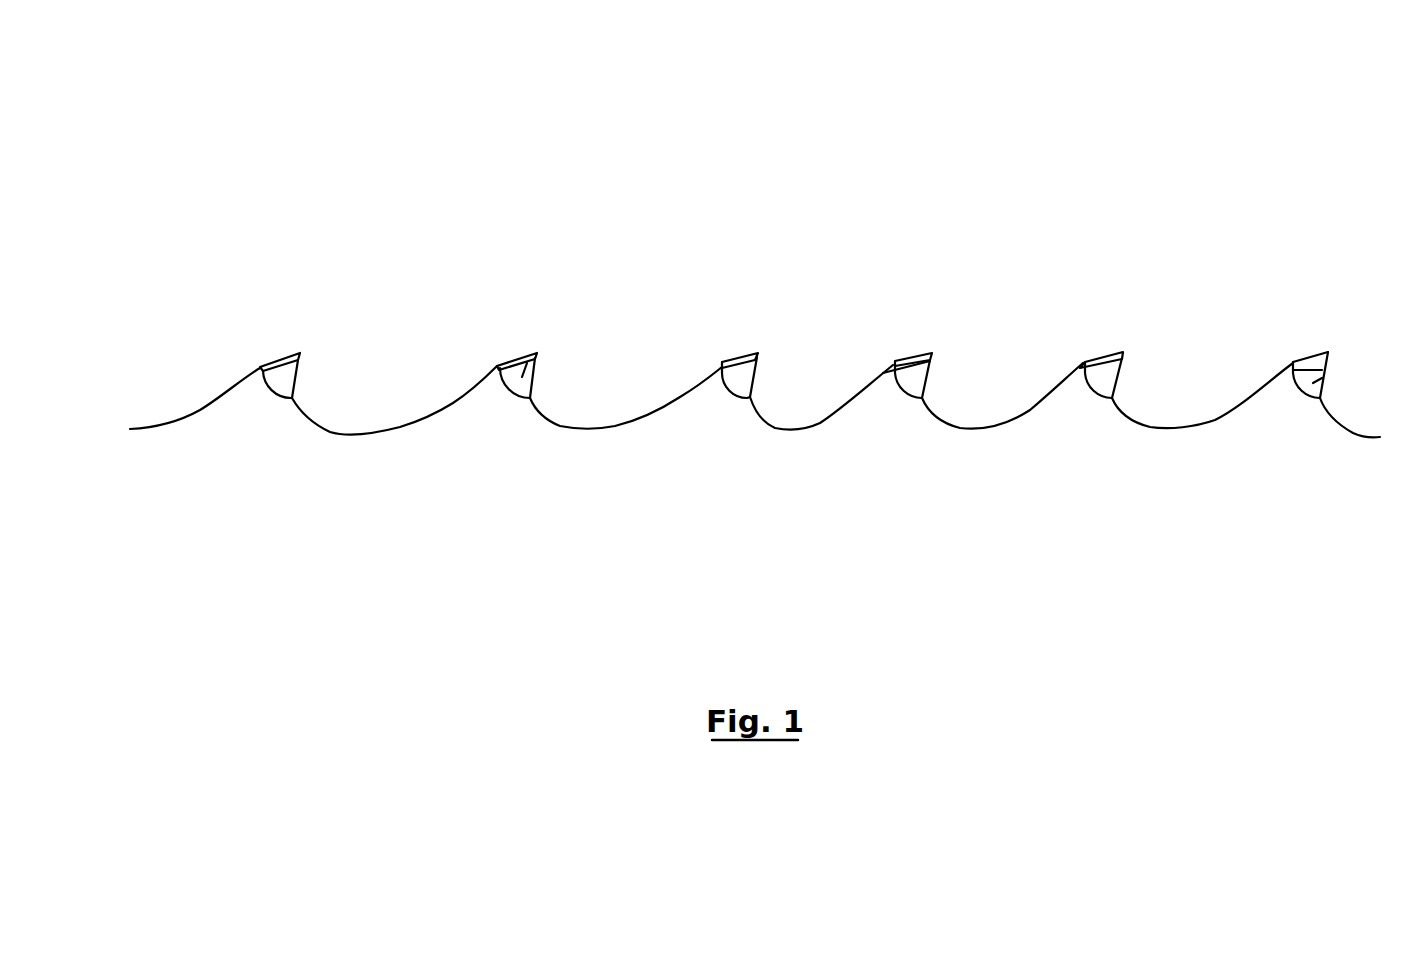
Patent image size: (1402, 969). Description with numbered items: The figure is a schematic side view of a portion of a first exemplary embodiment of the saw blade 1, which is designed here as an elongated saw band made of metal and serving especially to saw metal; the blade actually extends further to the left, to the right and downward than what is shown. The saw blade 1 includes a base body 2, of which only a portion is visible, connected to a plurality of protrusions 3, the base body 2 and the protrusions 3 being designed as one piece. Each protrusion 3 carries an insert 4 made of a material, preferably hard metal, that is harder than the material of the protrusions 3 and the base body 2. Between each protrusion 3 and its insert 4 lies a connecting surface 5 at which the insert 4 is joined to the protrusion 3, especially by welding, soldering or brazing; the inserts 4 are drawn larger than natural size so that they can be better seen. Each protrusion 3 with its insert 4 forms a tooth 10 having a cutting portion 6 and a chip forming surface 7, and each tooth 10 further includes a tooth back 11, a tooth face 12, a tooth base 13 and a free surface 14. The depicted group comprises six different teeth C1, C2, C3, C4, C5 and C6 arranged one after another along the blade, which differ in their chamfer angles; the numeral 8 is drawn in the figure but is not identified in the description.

The saw blade 1 is at (870, 201).
The base body 2 is at (343, 453).
The protrusion 3 is at (492, 382).
The insert 4 is at (282, 382).
The connecting surface 5 is at (268, 392).
The cutting portion 6 is at (758, 353).
The chip forming surface 7 is at (300, 356).
The clearance face 8 is at (1118, 380).
The tooth 10 is at (300, 334).
The tooth back 11 is at (271, 370).
The tooth face 12 is at (297, 378).
The tooth base 13 is at (405, 427).
The free surface 14 is at (1103, 353).
The tooth C1 is at (1308, 400).
The tooth C2 is at (1102, 400).
The tooth C3 is at (908, 400).
The tooth C4 is at (737, 400).
The tooth C5 is at (516, 400).
The tooth C6 is at (275, 402).